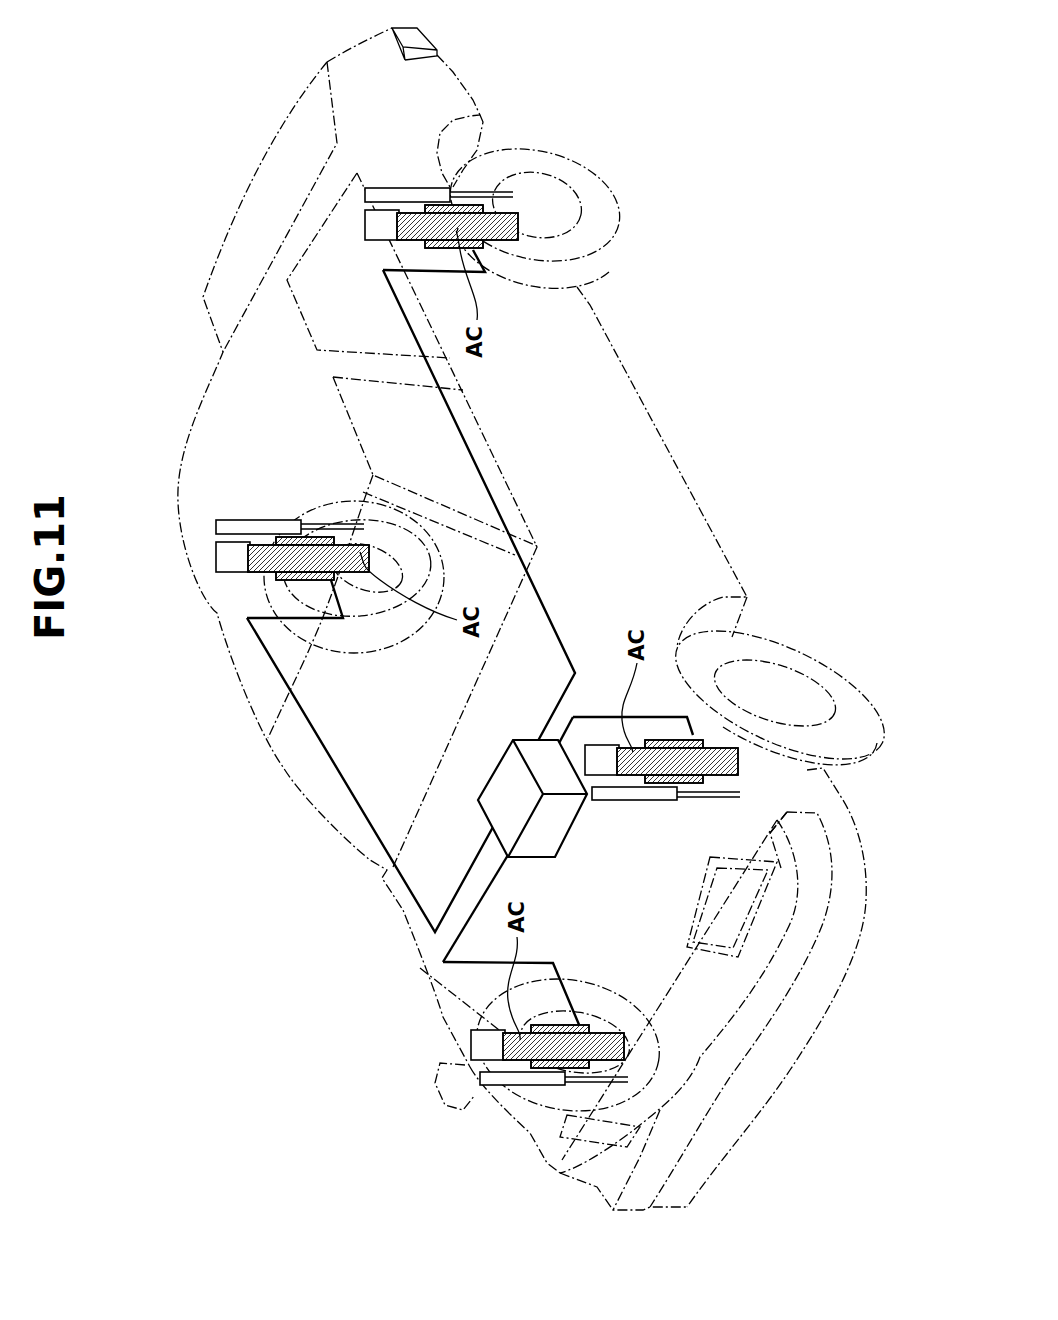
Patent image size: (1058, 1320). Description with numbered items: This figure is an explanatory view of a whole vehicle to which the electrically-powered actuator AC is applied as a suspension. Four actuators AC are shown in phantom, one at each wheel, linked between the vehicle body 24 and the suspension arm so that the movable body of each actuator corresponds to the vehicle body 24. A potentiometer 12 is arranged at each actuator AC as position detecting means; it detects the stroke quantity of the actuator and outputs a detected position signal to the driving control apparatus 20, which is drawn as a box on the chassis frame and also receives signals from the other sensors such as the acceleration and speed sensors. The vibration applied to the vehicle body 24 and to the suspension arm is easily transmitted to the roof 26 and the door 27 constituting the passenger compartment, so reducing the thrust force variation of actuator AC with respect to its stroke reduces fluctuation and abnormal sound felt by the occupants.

The potentiometer 12 is at (397, 187).
The driving control apparatus 20 is at (512, 792).
The vehicle body 24 is at (258, 695).
The roof 26 is at (210, 470).
The door 27 is at (598, 447).